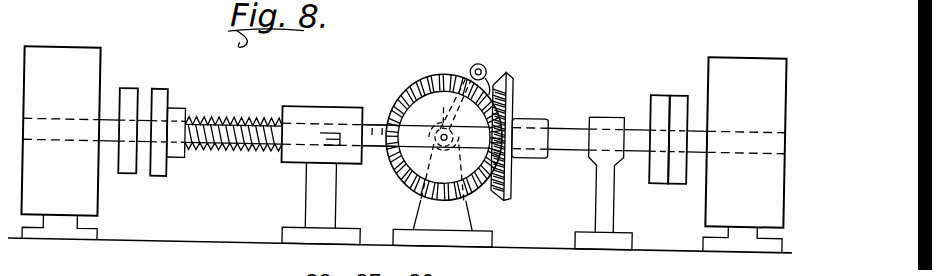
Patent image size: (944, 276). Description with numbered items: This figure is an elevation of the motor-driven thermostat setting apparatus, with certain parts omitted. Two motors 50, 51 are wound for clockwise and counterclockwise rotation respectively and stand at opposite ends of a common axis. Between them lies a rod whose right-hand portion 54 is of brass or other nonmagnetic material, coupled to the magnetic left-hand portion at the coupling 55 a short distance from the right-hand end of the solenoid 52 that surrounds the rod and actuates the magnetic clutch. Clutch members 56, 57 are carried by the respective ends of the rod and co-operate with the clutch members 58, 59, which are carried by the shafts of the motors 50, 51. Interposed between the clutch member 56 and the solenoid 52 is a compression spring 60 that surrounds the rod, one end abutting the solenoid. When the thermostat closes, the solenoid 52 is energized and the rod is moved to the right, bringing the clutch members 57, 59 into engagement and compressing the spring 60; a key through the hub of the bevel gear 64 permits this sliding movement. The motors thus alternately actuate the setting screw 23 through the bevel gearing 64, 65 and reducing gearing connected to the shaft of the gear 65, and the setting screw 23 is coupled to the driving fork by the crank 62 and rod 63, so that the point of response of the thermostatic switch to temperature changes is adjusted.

The motor 50 is at (50, 66).
The motor 51 is at (742, 61).
The solenoid 52 is at (323, 101).
The setting screw 23 is at (433, 116).
The right-hand portion of the rod 54 is at (371, 131).
The coupling 55 is at (308, 146).
The clutch member 56 is at (160, 92).
The clutch member 57 is at (657, 93).
The clutch member 58 is at (125, 95).
The clutch member 59 is at (675, 90).
The compression spring 60 is at (215, 111).
The crank 62 is at (459, 58).
The rod 63 is at (480, 61).
The bevel gear 64 is at (497, 78).
The bevel gear 65 is at (437, 37).